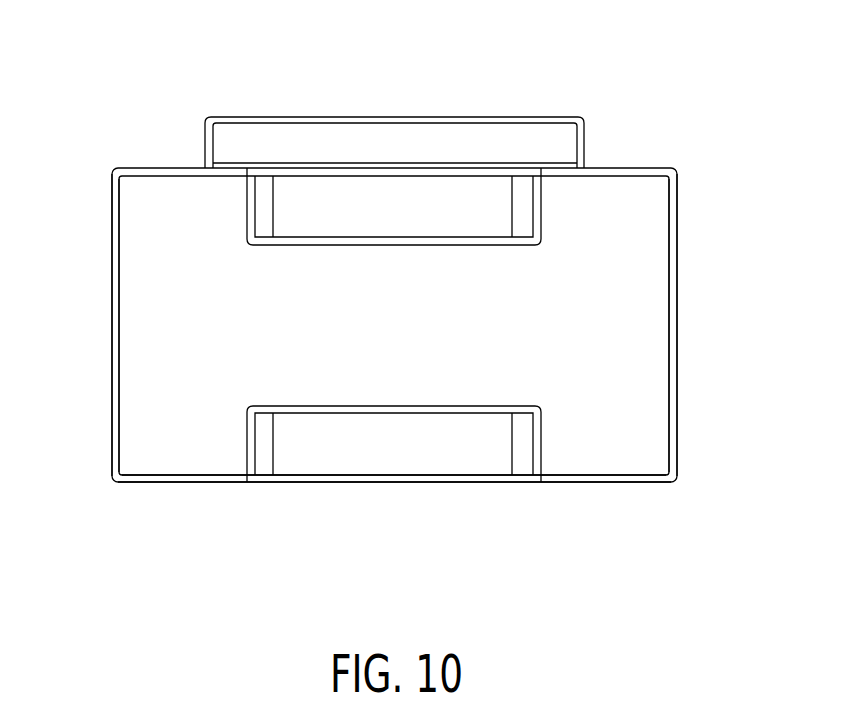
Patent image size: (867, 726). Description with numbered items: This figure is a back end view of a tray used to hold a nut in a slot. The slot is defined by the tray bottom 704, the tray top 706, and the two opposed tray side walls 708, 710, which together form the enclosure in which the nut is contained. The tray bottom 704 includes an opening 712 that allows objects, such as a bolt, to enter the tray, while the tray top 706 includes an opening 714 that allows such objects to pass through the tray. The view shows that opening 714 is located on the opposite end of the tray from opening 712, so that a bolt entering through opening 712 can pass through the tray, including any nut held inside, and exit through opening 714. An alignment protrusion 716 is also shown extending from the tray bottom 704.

The tray bottom 704 is at (628, 162).
The tray top 706 is at (193, 483).
The tray side wall 708 is at (112, 323).
The tray side wall 710 is at (677, 396).
The opening 712 is at (430, 198).
The opening 714 is at (436, 461).
The alignment protrusion 716 is at (238, 142).